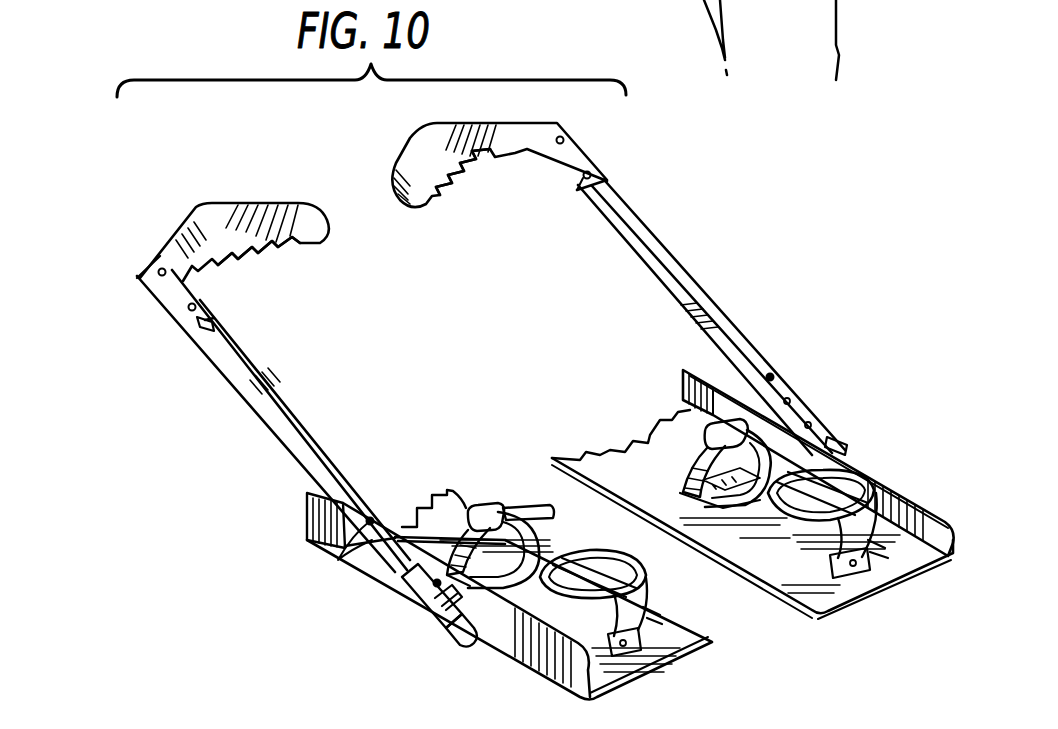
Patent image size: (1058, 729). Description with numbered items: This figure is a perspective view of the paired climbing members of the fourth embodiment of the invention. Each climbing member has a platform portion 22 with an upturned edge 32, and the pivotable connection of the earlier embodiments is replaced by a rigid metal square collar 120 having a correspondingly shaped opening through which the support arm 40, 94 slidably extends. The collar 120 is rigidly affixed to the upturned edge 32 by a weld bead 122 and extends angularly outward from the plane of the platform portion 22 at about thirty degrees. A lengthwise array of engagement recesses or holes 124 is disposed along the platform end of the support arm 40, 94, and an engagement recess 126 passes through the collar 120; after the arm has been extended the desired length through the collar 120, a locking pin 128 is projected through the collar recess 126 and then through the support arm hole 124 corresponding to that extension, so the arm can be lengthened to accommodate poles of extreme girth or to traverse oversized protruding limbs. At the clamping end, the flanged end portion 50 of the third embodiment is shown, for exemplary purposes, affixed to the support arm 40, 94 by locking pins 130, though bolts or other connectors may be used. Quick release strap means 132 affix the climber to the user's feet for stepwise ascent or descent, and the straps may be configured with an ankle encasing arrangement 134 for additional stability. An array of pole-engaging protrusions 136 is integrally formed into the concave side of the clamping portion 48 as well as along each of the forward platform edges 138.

The platform portion 22 is at (681, 641).
The upturned edge 32 is at (536, 641).
The support arm 40 is at (491, 377).
The support arm 94 is at (254, 410).
The clamping portion 48 is at (236, 214).
The flanged end portion 50 is at (167, 298).
The square collar 120 is at (420, 598).
The weld bead 122 is at (455, 630).
The engagement recesses or holes 124 is at (370, 523).
The engagement recess 126 is at (435, 585).
The locking pin 128 is at (440, 614).
The locking pins 130 is at (201, 310).
The quick release strap means 132 is at (640, 512).
The ankle encasing arrangement 134 is at (782, 517).
The pole-engaging protrusions 136 is at (253, 239).
The forward platform edges 138 is at (452, 494).